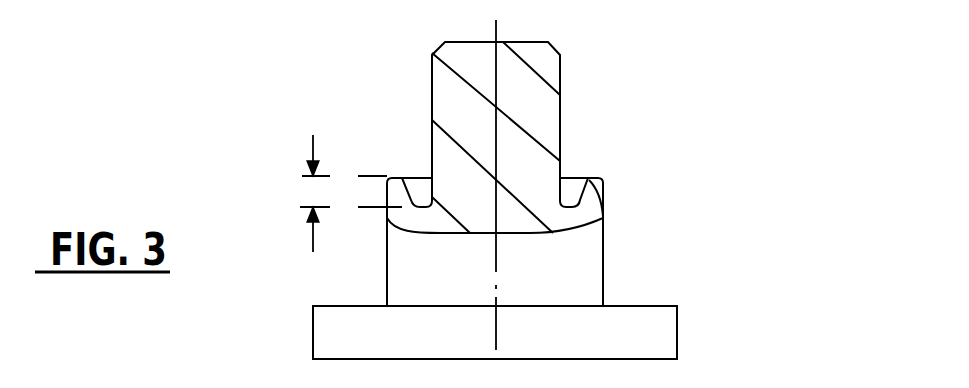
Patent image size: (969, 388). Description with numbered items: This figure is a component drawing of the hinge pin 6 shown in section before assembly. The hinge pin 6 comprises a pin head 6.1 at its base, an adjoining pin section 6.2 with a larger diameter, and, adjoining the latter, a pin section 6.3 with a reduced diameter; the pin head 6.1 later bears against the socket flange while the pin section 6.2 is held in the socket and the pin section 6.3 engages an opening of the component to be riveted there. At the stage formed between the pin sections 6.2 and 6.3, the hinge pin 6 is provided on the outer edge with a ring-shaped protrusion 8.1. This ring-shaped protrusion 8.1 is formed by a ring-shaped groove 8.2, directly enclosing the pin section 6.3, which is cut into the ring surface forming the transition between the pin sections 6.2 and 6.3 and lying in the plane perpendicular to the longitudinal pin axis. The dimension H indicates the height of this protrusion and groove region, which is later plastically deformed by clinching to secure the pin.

The hinge pin 6 is at (333, 272).
The pin head 6.1 is at (655, 331).
The pin section 6.2 is at (565, 273).
The pin section 6.3 is at (527, 70).
The ring-shaped protrusion 8.1 is at (602, 177).
The ring-shaped groove 8.2 is at (570, 188).
The height dimension H is at (313, 190).